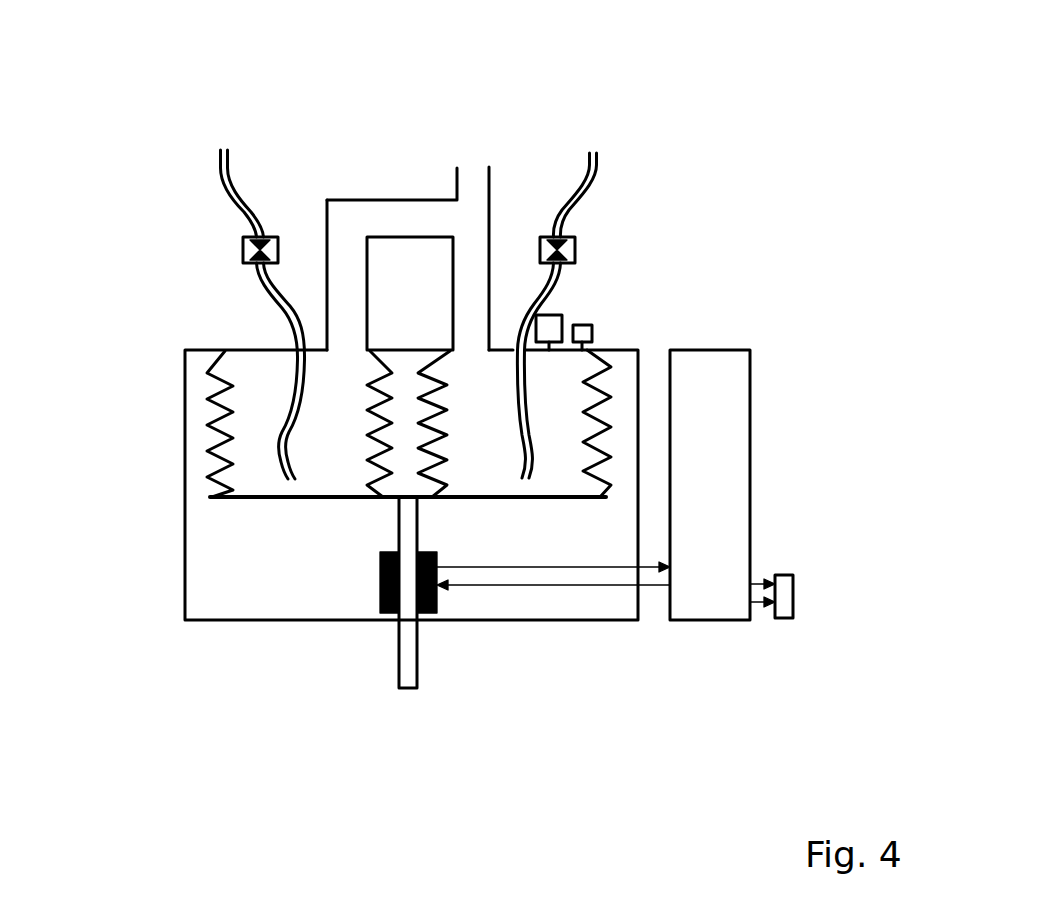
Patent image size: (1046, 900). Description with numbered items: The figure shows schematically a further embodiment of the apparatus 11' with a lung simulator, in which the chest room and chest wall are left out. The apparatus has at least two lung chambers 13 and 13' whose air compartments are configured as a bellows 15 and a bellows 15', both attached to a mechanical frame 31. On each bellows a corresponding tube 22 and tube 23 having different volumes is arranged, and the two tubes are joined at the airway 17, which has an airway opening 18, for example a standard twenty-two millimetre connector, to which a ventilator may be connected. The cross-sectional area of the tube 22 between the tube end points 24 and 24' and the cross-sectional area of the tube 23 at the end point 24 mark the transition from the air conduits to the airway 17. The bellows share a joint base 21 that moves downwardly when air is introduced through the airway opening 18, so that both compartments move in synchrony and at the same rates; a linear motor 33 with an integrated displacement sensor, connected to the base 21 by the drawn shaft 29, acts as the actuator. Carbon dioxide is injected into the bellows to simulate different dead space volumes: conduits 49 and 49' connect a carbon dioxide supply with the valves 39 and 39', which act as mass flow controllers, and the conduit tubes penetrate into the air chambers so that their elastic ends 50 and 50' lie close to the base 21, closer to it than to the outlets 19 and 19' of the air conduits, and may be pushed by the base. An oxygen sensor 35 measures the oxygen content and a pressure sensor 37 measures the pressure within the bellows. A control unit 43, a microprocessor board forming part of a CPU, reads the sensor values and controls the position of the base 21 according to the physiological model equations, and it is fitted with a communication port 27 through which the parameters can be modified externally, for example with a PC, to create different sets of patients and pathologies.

The apparatus 11' is at (522, 358).
The lung chamber 13 is at (137, 423).
The lung chamber 13' is at (693, 408).
The bellows 15 is at (152, 410).
The bellows 15' is at (695, 397).
The airway 17 is at (452, 175).
The airway opening 18 is at (470, 163).
The outlet 19 is at (311, 278).
The outlet 19' is at (543, 229).
The base 21 is at (340, 498).
The tube 22 is at (286, 232).
The tube 23 is at (497, 273).
The tube end point 24 is at (410, 293).
The tube end point 24' is at (399, 178).
The communication port 27 is at (793, 583).
The shaft 29 is at (398, 525).
The mechanical frame 31 is at (185, 482).
The linear motor 33 is at (379, 580).
The oxygen sensor 35 is at (562, 315).
The pressure sensor 37 is at (593, 326).
The valve 39 is at (169, 210).
The valve 39' is at (611, 206).
The control unit 43 is at (750, 538).
The conduit tube 49 is at (205, 277).
The conduit tube 49' is at (621, 269).
The end of conduit tube 50 is at (167, 396).
The end of conduit tube 50' is at (716, 440).